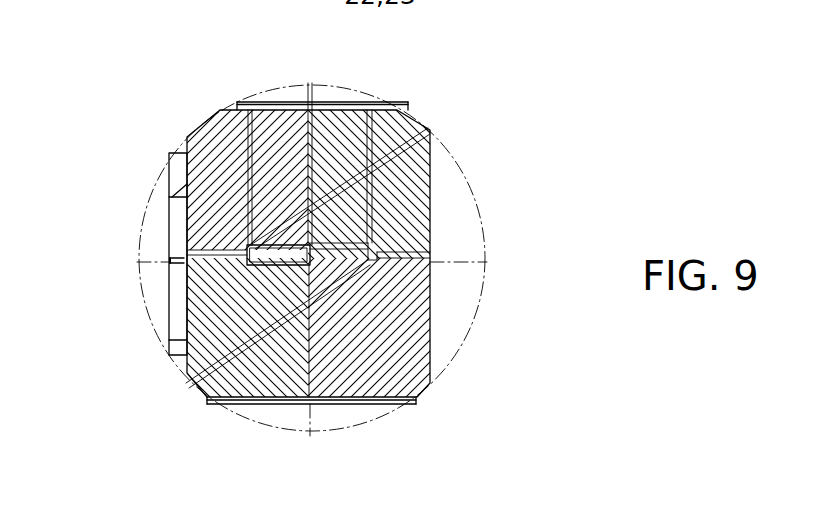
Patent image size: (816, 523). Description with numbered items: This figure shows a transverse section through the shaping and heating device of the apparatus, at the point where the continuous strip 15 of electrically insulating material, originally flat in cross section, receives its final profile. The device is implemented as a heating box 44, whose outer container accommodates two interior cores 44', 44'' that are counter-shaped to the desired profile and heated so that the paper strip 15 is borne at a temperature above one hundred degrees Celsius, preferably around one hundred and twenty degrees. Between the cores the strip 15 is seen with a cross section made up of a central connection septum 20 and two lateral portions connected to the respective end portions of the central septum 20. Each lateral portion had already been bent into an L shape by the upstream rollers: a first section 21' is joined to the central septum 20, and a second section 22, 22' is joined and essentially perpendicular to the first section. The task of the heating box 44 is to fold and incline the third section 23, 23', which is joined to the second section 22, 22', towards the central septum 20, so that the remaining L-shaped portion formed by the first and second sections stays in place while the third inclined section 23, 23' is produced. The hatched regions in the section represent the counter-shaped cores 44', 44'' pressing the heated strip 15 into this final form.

The continuous strip 15 is at (245, 250).
The central connection septum 20 is at (340, 220).
The first section 21' is at (453, 215).
The second section 22 is at (162, 287).
The second section 22' is at (479, 281).
The third section 23 is at (285, 280).
The third section 23' is at (358, 329).
The heating box 44 is at (316, 55).
The interior core 44' is at (130, 278).
The interior core 44'' is at (347, 425).